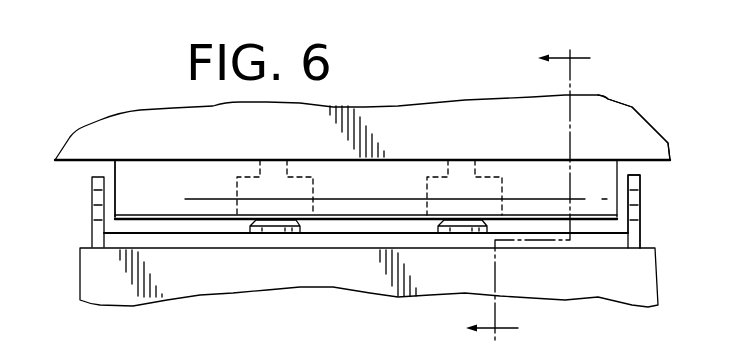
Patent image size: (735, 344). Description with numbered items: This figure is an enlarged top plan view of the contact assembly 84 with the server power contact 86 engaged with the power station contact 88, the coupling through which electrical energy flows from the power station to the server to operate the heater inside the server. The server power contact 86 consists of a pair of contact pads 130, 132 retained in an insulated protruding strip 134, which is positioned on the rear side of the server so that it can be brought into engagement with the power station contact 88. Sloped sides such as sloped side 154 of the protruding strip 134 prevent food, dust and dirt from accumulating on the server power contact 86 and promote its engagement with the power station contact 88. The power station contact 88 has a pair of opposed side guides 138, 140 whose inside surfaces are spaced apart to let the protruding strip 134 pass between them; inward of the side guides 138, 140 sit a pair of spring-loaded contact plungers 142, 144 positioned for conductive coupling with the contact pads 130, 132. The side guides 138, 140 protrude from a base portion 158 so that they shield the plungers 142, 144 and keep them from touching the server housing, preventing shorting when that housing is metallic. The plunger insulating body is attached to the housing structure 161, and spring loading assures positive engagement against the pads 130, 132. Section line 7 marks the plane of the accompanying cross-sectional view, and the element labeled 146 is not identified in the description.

The section line 7- 7 is at (528, 182).
The contact assembly 84 is at (88, 205).
The server power contact 86 is at (151, 180).
The power station contact 88 is at (85, 241).
The contact pad 130 is at (233, 194).
The contact pad 132 is at (503, 195).
The protruding strip 134 is at (106, 209).
The side guide 138 is at (642, 207).
The side guide 140 is at (92, 232).
The spring-loaded contact plunger 142 is at (488, 228).
The spring-loaded contact plunger 144 is at (249, 229).
The flange 146 is at (103, 190).
The sloped side 154 is at (585, 170).
The base portion 158 is at (596, 226).
The housing structure 161 is at (383, 134).